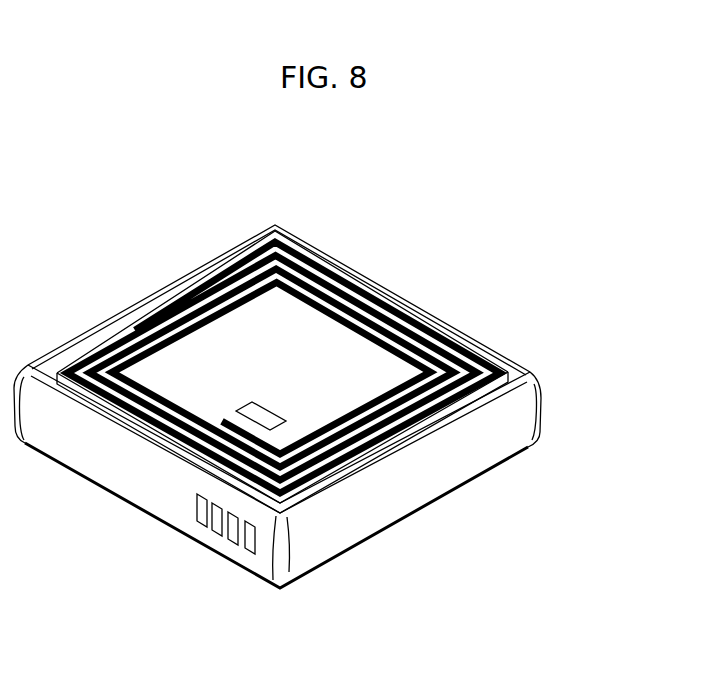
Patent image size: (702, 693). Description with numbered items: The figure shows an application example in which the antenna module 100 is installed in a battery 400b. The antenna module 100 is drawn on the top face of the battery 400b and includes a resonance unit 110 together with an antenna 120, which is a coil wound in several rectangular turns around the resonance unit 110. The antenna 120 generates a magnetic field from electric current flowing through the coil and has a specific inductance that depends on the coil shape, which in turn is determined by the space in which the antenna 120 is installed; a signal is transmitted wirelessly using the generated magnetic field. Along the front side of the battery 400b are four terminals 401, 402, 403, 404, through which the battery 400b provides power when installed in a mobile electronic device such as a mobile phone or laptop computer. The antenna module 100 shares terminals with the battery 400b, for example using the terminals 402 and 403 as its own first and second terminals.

The antenna module 100 is at (298, 372).
The resonance unit 110 is at (278, 408).
The antenna 120 is at (175, 401).
The battery 400b is at (532, 372).
The terminal 401 is at (196, 519).
The terminal 402 is at (213, 532).
The terminal 403 is at (231, 545).
The terminal 404 is at (250, 556).